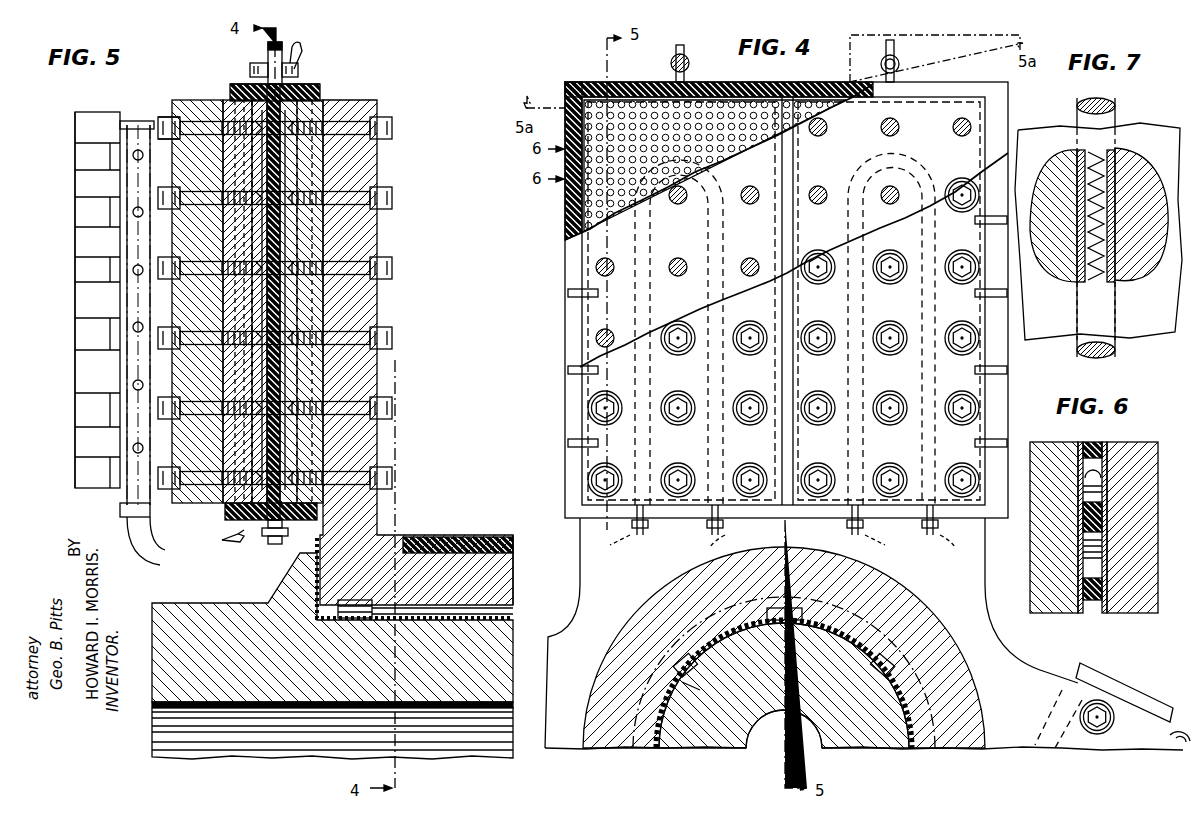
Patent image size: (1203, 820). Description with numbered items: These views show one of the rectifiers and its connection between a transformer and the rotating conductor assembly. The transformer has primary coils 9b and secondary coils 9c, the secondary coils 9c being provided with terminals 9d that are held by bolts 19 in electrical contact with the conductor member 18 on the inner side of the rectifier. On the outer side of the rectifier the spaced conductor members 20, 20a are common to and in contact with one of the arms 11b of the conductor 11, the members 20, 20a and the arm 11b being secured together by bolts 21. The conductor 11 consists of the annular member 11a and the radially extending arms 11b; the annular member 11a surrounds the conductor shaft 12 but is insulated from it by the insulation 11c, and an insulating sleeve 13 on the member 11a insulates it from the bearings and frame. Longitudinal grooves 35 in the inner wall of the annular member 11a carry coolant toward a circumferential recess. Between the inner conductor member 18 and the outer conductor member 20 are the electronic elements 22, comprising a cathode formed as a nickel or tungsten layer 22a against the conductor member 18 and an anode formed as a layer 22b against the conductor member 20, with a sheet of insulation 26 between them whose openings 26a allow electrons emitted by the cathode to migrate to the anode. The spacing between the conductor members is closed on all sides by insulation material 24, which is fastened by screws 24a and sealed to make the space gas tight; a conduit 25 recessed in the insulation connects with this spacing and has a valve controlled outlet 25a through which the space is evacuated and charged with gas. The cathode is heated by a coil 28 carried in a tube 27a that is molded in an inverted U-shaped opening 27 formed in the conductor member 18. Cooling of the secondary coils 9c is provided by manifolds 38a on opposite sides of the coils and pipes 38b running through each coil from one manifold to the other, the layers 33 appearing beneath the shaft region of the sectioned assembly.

In FIG. 5, the primary coils 9b is at (108, 122).
In FIG. 5, the secondary coils 9c is at (83, 213).
In FIG. 5, the terminal 9d is at (212, 96).
In FIG. 5, the conductor 11 is at (462, 588).
In FIG. 5, the annular member 11a is at (505, 570).
In FIG. 4, the annular member 11a is at (632, 626).
In FIG. 5, the arms 11b is at (360, 318).
In FIG. 4, the arms 11b is at (595, 465).
In FIG. 5, the insulation 11c is at (317, 548).
In FIG. 4, the insulation 11c is at (843, 640).
In FIG. 5, the conductor shaft 12 is at (495, 655).
In FIG. 4, the conductor shaft 12 is at (705, 748).
In FIG. 5, the sleeve 13 is at (460, 537).
In FIG. 5, the conductor member 18 is at (262, 258).
In FIG. 6, the conductor member 18 is at (1136, 605).
In FIG. 5, the bolts 19 is at (197, 483).
In FIG. 5, the conductor member 20 is at (330, 178).
In FIG. 4, the conductor member 20 is at (600, 318).
In FIG. 6, the conductor member 20 is at (1030, 560).
In FIG. 4, the conductor member 20a is at (948, 110).
In FIG. 5, the bolts 21 is at (377, 280).
In FIG. 4, the bolts 21 is at (598, 267).
In FIG. 5, the electronic elements 22 is at (314, 318).
In FIG. 5, the cathode layer 22a is at (262, 302).
In FIG. 6, the cathode layer 22a is at (1102, 444).
In FIG. 5, the anode layer 22b is at (285, 253).
In FIG. 6, the anode layer 22b is at (1078, 610).
In FIG. 5, the insulation material 24 is at (320, 88).
In FIG. 4, the insulation material 24 is at (593, 84).
In FIG. 5, the screws 24a is at (305, 85).
In FIG. 5, the conduit 25 is at (267, 522).
In FIG. 5, the valve controlled outlet 25a is at (268, 62).
In FIG. 4, the valve controlled outlet 25a is at (672, 64).
In FIG. 4, the insulation sheet 26 is at (586, 207).
In FIG. 4, the openings 26a is at (585, 216).
In FIG. 5, the elongated opening 27 is at (228, 385).
In FIG. 4, the elongated opening 27 is at (645, 228).
In FIG. 7, the elongated opening 27 is at (1140, 165).
In FIG. 7, the tube 27a is at (1052, 290).
In FIG. 7, the heating coil 28 is at (1082, 150).
In FIG. 5, the insulating layers 33 is at (266, 742).
In FIG. 4, the insulating layers 33 is at (820, 738).
In FIG. 4, the grooves 35 is at (690, 684).
In FIG. 5, the manifolds 38a is at (120, 498).
In FIG. 5, the pipes 38b is at (135, 450).